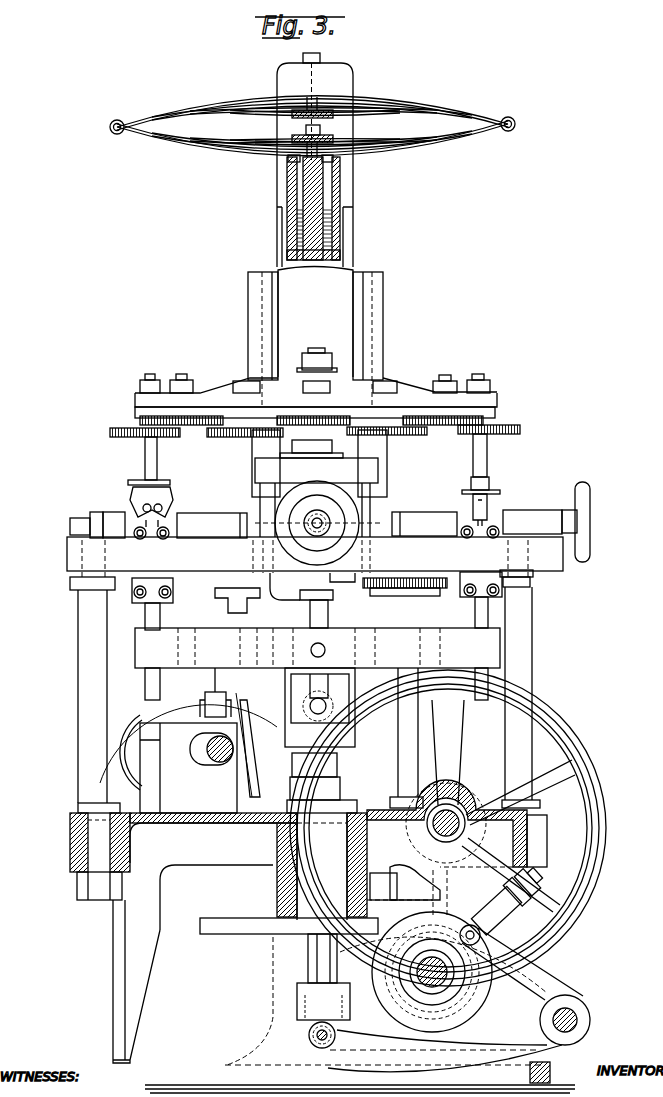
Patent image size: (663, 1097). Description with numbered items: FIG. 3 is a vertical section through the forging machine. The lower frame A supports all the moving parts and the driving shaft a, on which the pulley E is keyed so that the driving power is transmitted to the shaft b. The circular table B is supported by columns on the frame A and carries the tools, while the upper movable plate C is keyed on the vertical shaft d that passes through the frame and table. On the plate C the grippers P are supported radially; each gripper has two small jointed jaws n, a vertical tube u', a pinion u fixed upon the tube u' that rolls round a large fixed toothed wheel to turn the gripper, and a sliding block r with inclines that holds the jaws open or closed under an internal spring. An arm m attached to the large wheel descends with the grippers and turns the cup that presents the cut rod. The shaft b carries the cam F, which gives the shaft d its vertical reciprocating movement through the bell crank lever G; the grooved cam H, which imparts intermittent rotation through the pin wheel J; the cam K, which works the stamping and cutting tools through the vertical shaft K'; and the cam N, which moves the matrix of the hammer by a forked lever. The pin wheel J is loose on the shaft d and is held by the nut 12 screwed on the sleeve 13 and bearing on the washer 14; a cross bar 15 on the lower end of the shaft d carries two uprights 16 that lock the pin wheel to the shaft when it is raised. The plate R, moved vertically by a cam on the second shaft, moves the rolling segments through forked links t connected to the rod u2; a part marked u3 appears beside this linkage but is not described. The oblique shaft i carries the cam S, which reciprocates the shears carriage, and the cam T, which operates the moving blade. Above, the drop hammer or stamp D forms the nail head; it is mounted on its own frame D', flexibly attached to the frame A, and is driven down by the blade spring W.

The blade spring W is at (312, 106).
The hammer frame D' is at (326, 165).
The drop hammer D is at (315, 337).
The upper movable plate C is at (316, 405).
The pinion u is at (310, 423).
The vertical tube u' is at (327, 462).
The sliding block r is at (306, 486).
The gripper P is at (308, 500).
The jointed jaws n is at (500, 503).
The arm m is at (262, 505).
The circular table B is at (315, 557).
The forked links t is at (136, 590).
The rod u2 is at (475, 612).
The rack u3 is at (406, 591).
The plate R is at (317, 648).
The vertical shaft K' is at (354, 738).
The cam T is at (135, 720).
The cam S is at (178, 764).
The oblique shaft i is at (199, 756).
The vertical shaft d is at (314, 765).
The nut 12 is at (340, 785).
The washer 14 is at (350, 806).
The pulley E is at (453, 828).
The driving shaft a is at (440, 843).
The lower frame A is at (298, 921).
The sleeve 13 is at (322, 866).
The pin wheel J is at (289, 917).
The uprights 16 is at (323, 960).
The cross bar 15 is at (305, 1010).
The grooved cam H is at (521, 933).
The cam K is at (465, 991).
The cam F is at (431, 972).
The shaft b is at (432, 979).
The cam N is at (432, 972).
The bell crank lever G is at (393, 1004).